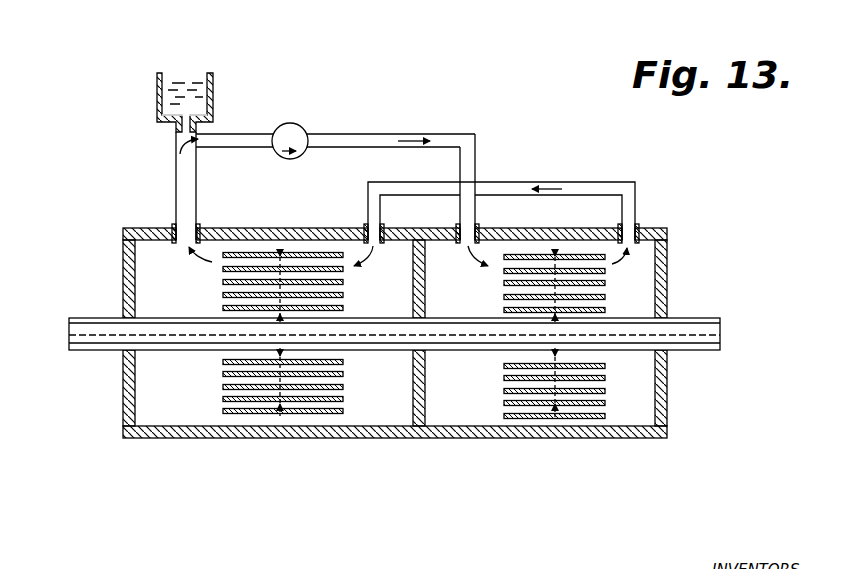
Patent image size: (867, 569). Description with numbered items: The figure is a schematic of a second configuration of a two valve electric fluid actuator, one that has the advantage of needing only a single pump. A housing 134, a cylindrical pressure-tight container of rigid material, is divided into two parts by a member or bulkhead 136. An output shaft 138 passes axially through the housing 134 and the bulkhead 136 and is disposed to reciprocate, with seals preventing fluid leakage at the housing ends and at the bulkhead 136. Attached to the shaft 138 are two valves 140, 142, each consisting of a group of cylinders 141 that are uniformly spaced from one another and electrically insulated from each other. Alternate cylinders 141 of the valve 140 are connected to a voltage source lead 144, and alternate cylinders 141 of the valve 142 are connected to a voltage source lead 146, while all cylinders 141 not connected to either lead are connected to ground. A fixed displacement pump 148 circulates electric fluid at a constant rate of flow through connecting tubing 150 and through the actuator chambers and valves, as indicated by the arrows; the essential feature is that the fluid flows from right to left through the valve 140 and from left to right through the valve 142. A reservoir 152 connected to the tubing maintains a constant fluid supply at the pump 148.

The housing 134 is at (123, 268).
The bulkhead 136 is at (425, 292).
The output shaft 138 is at (412, 343).
The valve 140 is at (217, 392).
The cylinders 141 is at (223, 295).
The valve 142 is at (610, 387).
The voltage source lead 144 is at (317, 418).
The voltage source lead 146 is at (587, 421).
The pump 148 is at (306, 128).
The connecting tubing 150 is at (487, 187).
The reservoir 152 is at (213, 75).